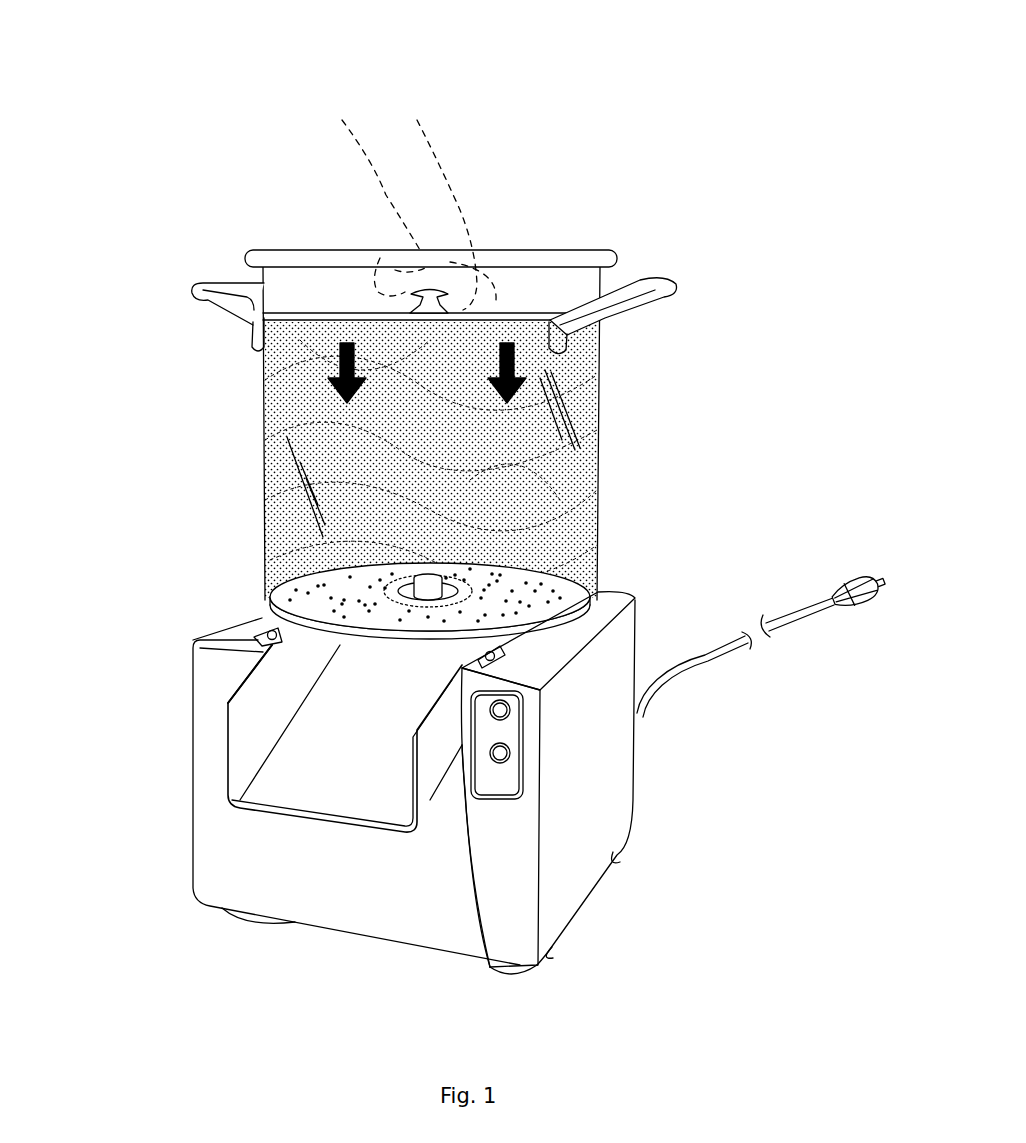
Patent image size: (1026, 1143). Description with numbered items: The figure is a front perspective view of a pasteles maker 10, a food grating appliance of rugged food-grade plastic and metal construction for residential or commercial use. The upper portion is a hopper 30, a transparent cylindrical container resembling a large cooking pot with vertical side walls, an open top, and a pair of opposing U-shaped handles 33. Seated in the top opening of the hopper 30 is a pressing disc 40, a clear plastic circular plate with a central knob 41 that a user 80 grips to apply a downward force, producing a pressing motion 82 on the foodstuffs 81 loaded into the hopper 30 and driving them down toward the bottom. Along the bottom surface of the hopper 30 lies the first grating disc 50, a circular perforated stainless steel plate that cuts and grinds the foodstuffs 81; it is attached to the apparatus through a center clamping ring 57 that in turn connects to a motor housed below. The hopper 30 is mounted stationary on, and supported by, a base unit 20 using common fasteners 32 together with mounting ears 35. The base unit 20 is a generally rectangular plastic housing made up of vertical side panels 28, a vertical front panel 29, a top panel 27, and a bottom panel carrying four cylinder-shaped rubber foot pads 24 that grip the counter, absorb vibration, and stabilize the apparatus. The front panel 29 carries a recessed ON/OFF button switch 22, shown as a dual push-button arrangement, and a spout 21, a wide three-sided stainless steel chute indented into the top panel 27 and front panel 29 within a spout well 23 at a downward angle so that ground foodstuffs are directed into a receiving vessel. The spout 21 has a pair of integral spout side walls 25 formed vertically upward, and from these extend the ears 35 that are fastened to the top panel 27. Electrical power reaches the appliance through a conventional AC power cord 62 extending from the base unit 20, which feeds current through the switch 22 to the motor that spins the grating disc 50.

The pasteles maker 10 is at (716, 136).
The base unit 20 is at (656, 787).
The spout 21 is at (283, 785).
The ON/OFF button switch 22 is at (520, 762).
The spout well 23 is at (490, 967).
The foot pads 24 is at (247, 920).
The spout side wall 25 is at (262, 738).
The top panel 27 is at (258, 640).
The side panel 28 is at (620, 658).
The front panel 29 is at (460, 917).
The hopper 30 is at (262, 428).
The fastener 32 is at (223, 628).
The handle 33 is at (207, 300).
The mounting ear 35 is at (262, 630).
The pressing disc 40 is at (327, 313).
The knob 41 is at (436, 290).
The first grating disc 50 is at (520, 598).
The clamping ring 57 is at (400, 586).
The alternating current (AC) power cord 62 is at (793, 620).
The user 80 is at (443, 170).
The foodstuffs 81 is at (527, 443).
The pressing motion 82 is at (500, 360).